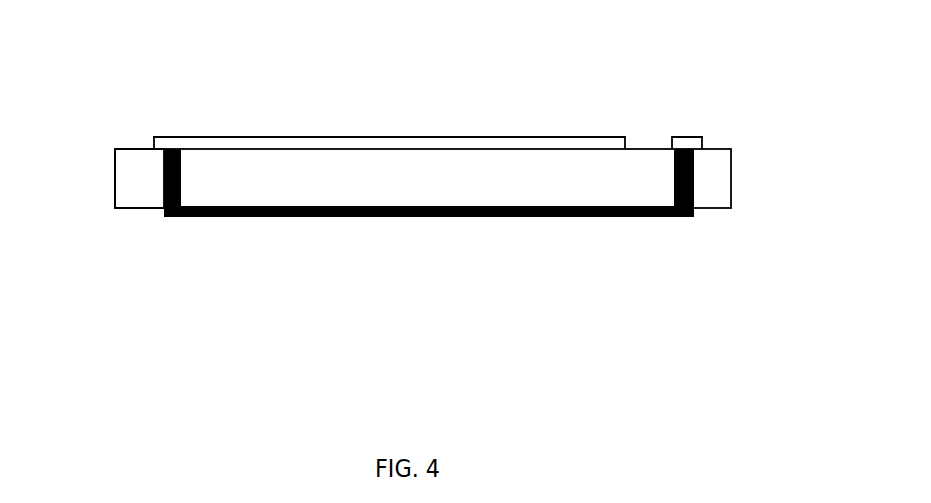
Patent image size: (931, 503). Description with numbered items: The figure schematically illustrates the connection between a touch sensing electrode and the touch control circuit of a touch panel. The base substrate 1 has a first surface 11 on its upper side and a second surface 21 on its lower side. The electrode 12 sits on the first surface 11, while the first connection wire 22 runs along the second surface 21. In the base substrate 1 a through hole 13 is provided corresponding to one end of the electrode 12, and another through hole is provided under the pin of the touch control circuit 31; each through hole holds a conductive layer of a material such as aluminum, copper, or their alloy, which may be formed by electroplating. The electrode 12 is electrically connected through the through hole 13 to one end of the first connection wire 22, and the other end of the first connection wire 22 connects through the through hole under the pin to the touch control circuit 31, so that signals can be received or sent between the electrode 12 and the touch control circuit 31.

The base substrate 1 is at (731, 183).
The first surface 11 is at (132, 147).
The electrode 12 is at (212, 143).
The through hole 13 is at (182, 185).
The second surface 21 is at (133, 208).
The first connection wire 22 is at (508, 217).
The touch control circuit 31 is at (693, 138).